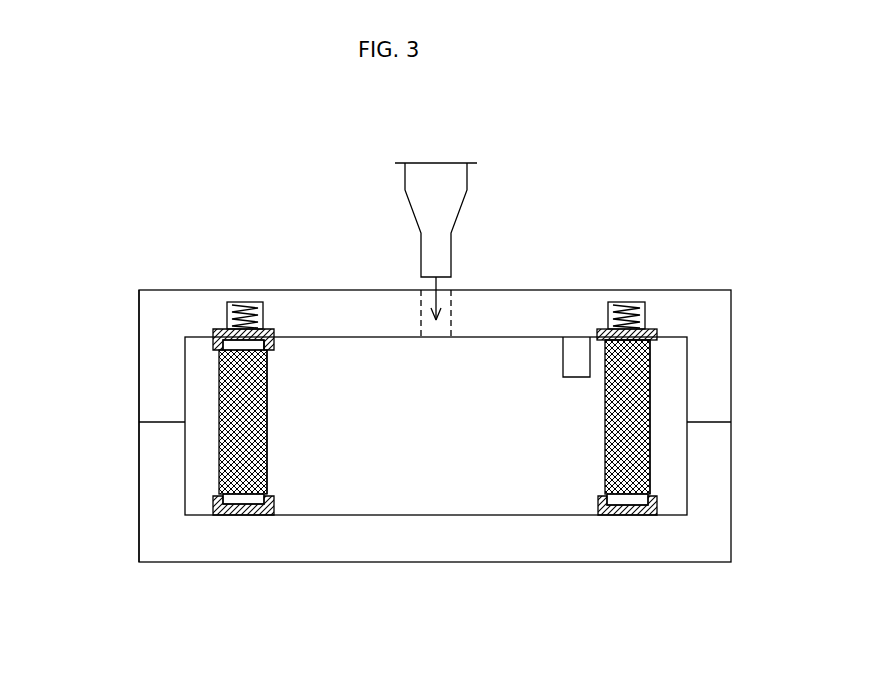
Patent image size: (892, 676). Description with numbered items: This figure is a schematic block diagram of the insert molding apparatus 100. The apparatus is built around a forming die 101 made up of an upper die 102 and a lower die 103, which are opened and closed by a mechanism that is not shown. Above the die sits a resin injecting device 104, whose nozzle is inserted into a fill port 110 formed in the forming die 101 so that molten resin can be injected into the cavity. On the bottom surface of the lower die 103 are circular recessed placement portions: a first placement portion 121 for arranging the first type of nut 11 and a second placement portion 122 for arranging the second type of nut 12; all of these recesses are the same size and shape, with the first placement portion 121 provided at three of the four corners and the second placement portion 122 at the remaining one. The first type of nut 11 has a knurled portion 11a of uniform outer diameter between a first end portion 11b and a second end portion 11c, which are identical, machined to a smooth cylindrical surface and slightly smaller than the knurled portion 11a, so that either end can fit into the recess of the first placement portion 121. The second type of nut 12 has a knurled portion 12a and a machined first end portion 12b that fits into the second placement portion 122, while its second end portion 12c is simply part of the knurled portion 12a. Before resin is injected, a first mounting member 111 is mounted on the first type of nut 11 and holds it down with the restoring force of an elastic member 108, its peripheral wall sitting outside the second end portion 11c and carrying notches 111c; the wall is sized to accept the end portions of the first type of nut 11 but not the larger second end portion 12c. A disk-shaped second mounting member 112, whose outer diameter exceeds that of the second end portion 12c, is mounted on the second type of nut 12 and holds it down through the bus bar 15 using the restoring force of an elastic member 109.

The insert molding apparatus 100 is at (452, 123).
The forming die 101 is at (224, 563).
The upper die 102 is at (139, 362).
The lower die 103 is at (139, 488).
The resin injecting device 104 is at (452, 255).
The elastic member 108 is at (251, 310).
The elastic member 109 is at (630, 302).
The fill port 110 is at (420, 300).
The first mounting member 111 is at (218, 330).
The notches 111c is at (277, 353).
The second mounting member 112 is at (652, 332).
The first type of nut 11 is at (265, 402).
The knurled portion 11a is at (266, 432).
The first end portion 11b is at (233, 500).
The second end portion 11c is at (263, 362).
The first placement portion 121 is at (245, 505).
The second placement portion 122 is at (607, 504).
The second type of nut 12 is at (650, 437).
The knurled portion 12a is at (640, 398).
The first end portion 12b is at (650, 497).
The second end portion 12c is at (650, 350).
The bus bar 15 is at (563, 358).